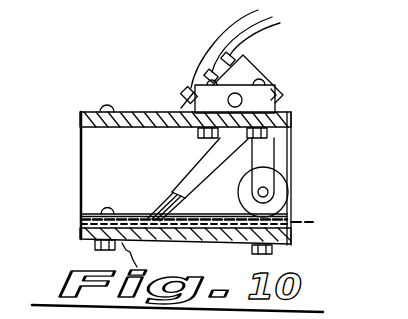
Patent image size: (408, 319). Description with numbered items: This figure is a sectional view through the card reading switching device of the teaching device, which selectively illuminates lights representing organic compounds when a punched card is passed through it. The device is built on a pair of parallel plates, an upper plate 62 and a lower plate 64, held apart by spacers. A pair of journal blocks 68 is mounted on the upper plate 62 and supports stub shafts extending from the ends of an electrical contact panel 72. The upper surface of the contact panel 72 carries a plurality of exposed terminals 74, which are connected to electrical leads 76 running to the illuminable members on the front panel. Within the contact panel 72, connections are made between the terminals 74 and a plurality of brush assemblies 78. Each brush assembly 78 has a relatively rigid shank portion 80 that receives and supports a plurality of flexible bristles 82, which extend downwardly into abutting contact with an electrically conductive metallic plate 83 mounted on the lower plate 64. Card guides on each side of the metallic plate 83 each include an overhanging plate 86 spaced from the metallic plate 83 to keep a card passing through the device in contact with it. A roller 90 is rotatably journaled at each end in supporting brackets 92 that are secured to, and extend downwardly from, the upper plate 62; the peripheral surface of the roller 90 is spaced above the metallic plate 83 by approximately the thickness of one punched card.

The upper plate 62 is at (160, 113).
The lower plate 64 is at (190, 240).
The journal block 68 is at (272, 88).
The electrical contact panel 72 is at (286, 95).
The terminal 74 is at (189, 90).
The electrical lead 76 is at (246, 40).
The brush assembly 78 is at (188, 165).
The shank portion 80 is at (194, 187).
The flexible bristles 82 is at (163, 194).
The electrically conductive metallic plate 83 is at (163, 228).
The overhanging plate 86 is at (88, 210).
The roller 90 is at (281, 192).
The supporting bracket 92 is at (266, 156).